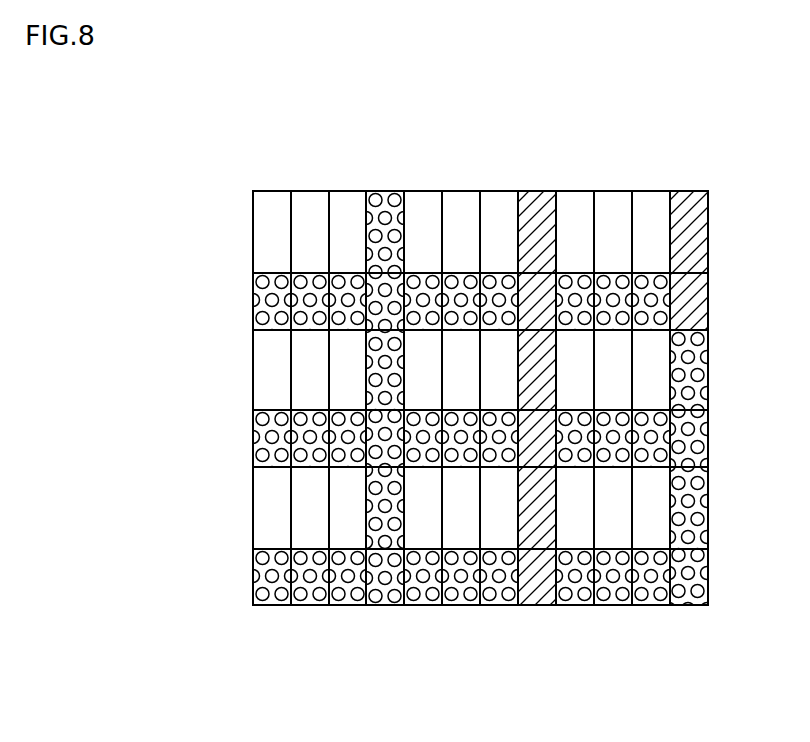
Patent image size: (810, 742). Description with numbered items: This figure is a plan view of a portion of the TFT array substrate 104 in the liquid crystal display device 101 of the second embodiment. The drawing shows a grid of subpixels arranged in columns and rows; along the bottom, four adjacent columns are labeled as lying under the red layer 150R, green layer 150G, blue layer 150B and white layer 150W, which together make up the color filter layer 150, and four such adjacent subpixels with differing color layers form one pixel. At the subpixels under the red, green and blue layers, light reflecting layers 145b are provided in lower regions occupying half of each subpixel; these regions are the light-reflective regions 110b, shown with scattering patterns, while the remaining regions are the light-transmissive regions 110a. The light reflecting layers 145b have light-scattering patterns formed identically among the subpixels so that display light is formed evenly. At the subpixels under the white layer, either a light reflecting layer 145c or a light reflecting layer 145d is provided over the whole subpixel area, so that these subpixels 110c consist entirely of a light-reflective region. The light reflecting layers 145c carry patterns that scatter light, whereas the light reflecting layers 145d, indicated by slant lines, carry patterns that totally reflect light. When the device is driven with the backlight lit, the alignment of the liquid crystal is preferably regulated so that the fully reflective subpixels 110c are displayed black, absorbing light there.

The liquid crystal display device 101 is at (663, 73).
The TFT array substrate 104 is at (702, 143).
The light-transmissive region 110a is at (262, 236).
The light-reflective region 110b is at (262, 300).
The subpixel with entirely light-reflective region 110c is at (365, 363).
The light reflecting layer 145b is at (346, 264).
The light reflecting layer 145c is at (389, 183).
The light reflecting layer 145d is at (538, 183).
The red layer 150R is at (272, 607).
The green layer 150G is at (310, 607).
The blue layer 150B is at (352, 607).
The white layer 150W is at (390, 607).
The color filter layer 150 is at (487, 678).